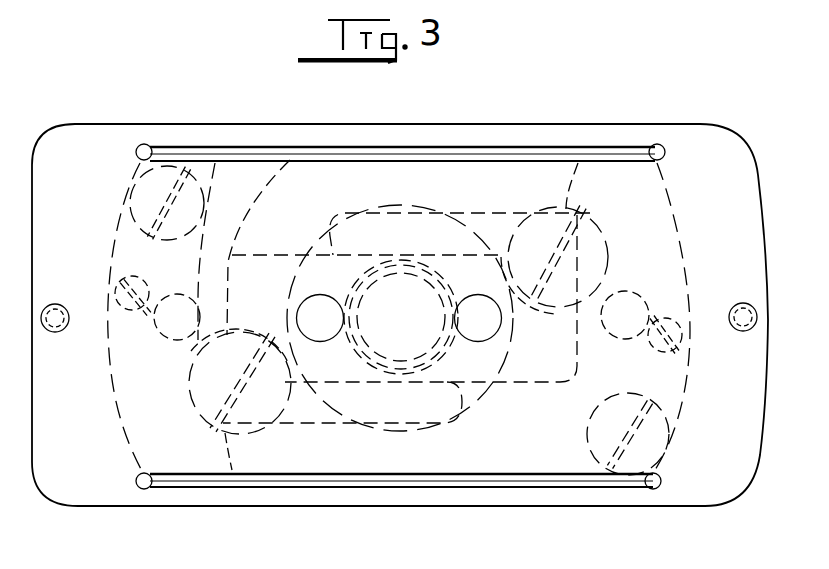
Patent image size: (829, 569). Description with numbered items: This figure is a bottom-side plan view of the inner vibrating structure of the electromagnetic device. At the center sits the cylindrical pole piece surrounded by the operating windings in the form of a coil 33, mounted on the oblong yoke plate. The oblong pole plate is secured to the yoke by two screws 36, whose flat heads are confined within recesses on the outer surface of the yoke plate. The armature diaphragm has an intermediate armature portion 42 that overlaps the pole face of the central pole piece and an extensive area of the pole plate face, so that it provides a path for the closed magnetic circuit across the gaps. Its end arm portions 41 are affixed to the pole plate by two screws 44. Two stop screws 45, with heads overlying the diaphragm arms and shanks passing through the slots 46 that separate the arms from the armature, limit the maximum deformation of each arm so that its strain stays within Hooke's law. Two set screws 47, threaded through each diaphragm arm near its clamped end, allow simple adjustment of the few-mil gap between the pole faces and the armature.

The coil 33 is at (233, 439).
The screws 36 is at (168, 343).
The end arm portions 41 is at (683, 389).
The intermediate armature portion 42 is at (457, 407).
The screws 44 is at (657, 447).
The stop screws 45 is at (550, 204).
The slots 46 is at (463, 212).
The set screws 47 is at (145, 276).